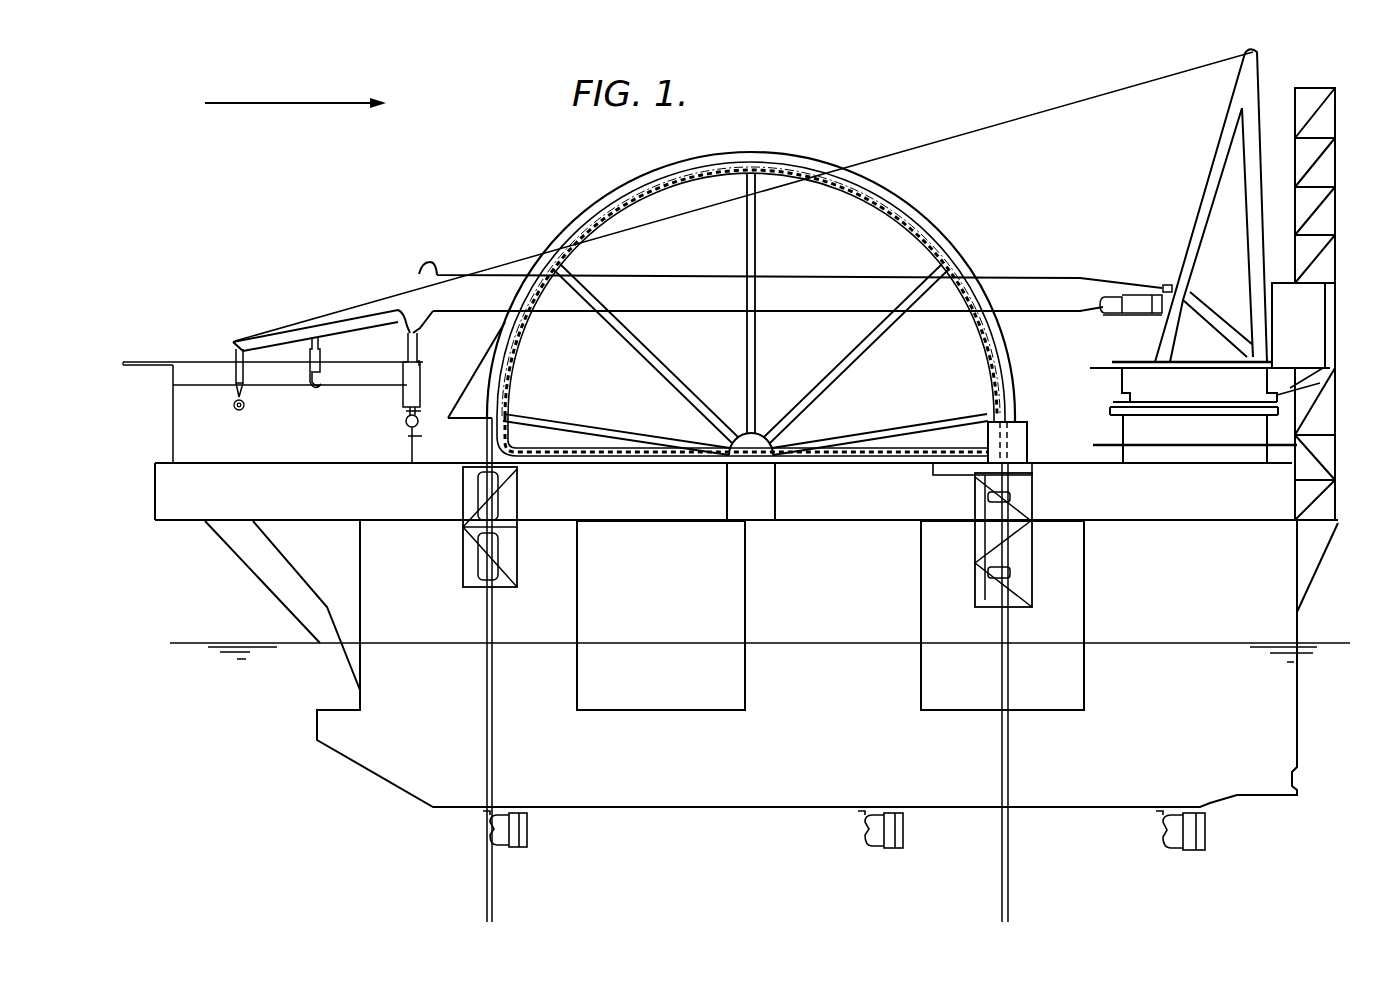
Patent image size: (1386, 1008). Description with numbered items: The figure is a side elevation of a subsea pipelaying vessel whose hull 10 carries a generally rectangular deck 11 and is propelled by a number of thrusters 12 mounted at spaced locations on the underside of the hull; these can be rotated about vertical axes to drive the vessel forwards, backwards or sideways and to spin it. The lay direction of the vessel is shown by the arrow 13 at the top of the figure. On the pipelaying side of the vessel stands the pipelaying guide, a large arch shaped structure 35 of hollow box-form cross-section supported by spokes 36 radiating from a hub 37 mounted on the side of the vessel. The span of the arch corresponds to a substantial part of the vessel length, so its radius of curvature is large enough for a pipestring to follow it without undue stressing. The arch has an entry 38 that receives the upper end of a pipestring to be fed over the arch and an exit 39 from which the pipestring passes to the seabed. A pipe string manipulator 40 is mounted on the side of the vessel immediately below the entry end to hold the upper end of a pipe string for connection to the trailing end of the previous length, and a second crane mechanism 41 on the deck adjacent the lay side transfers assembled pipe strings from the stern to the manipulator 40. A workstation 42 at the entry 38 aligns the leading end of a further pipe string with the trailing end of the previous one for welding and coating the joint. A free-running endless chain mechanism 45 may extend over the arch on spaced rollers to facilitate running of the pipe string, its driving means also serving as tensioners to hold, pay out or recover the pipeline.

The hull 10 is at (410, 752).
The deck 11 is at (180, 510).
The thrusters 12 is at (528, 833).
The arrow 13 is at (300, 103).
The arch shaped structure 35 is at (580, 215).
The spokes 36 is at (700, 345).
The hub 37 is at (765, 488).
The entry 38 is at (1024, 414).
The exit 39 is at (448, 432).
The pipe string manipulator 40 is at (1032, 494).
The second crane mechanism 41 is at (1025, 283).
The workstation 42 is at (1020, 438).
The endless chain mechanism 45 is at (573, 456).